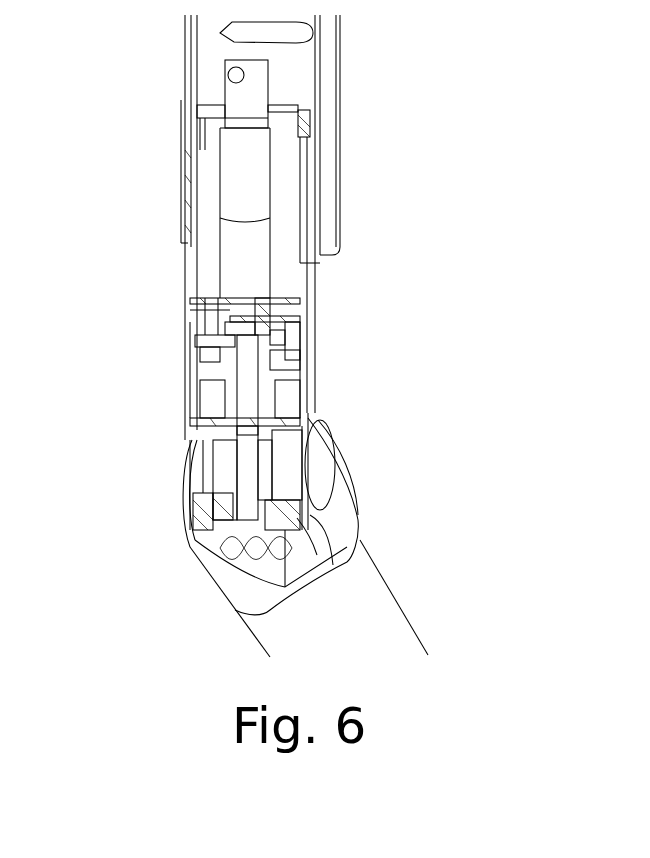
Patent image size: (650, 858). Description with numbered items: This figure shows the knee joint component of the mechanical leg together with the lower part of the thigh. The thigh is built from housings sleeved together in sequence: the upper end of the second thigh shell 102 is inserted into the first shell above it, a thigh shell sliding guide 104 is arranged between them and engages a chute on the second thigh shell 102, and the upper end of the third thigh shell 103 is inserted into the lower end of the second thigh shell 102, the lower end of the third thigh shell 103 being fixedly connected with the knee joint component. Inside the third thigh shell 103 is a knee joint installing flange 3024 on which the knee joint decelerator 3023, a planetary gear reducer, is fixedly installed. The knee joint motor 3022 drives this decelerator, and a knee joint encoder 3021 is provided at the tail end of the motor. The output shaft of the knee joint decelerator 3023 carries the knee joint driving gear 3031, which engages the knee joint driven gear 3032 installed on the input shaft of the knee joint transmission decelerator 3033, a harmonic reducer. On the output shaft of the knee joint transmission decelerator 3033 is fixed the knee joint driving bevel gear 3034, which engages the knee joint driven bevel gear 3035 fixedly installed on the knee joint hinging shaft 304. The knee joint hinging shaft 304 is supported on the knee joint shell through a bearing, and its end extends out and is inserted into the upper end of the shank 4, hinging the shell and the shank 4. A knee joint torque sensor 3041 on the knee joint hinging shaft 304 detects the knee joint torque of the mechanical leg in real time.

The second thigh shell 102 is at (322, 230).
The third thigh shell 103 is at (313, 305).
The thigh shell sliding guide 104 is at (311, 158).
The knee joint encoder 3021 is at (245, 90).
The knee joint motor 3022 is at (243, 142).
The knee joint decelerator 3023 is at (243, 236).
The knee joint installing flange 3024 is at (225, 318).
The knee joint driving gear 3031 is at (232, 325).
The knee joint driven gear 3032 is at (255, 325).
The knee joint transmission decelerator 3033 is at (226, 365).
The knee joint driving bevel gear 3034 is at (240, 436).
The knee joint driven bevel gear 3035 is at (210, 470).
The knee joint torque sensor 3041 is at (250, 470).
The knee joint hinging shaft 304 is at (305, 483).
The shank 4 is at (328, 612).